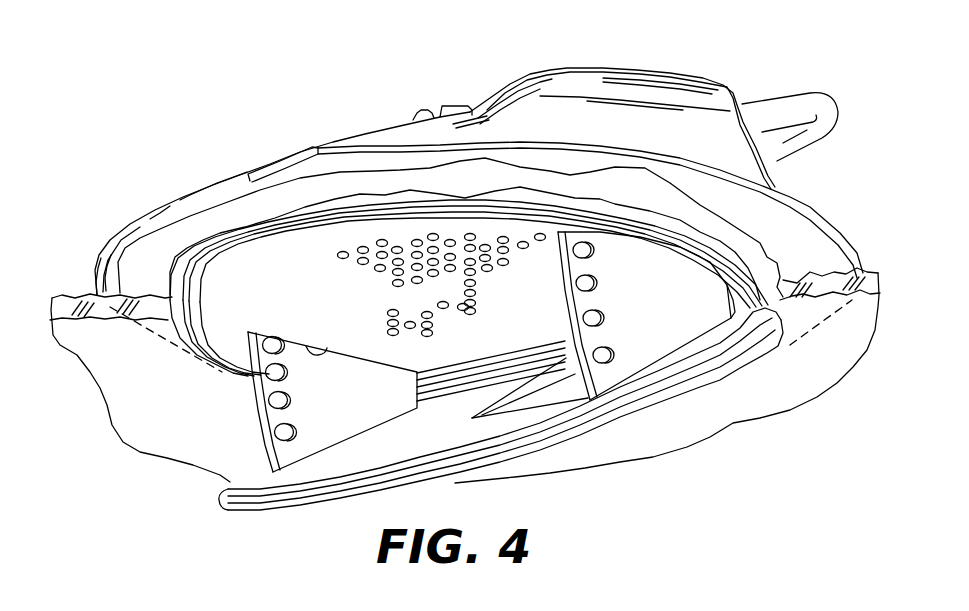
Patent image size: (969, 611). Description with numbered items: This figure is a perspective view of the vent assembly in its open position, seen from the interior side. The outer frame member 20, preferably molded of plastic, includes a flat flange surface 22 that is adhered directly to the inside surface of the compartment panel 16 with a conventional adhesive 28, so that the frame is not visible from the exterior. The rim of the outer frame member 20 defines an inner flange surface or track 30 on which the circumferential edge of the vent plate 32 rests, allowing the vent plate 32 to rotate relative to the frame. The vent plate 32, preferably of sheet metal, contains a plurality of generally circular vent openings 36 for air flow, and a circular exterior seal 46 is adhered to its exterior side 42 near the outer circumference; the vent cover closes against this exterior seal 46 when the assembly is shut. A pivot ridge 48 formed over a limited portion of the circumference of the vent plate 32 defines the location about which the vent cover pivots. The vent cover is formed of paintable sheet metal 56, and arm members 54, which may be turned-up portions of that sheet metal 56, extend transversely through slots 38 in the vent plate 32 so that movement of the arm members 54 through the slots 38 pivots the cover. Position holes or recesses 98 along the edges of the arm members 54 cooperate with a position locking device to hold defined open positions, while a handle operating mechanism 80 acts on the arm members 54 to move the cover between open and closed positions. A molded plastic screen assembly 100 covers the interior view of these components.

The panel 16 is at (127, 412).
The outer frame member 20 is at (106, 250).
The flange surface 22 is at (185, 218).
The adhesive 28 is at (328, 193).
The inner flange surface or track 30 is at (277, 518).
The vent plate 32 is at (291, 296).
The vent openings 36 is at (487, 268).
The slots 38 is at (312, 353).
The exterior side 42 is at (447, 357).
The exterior seal 46 is at (254, 260).
The pivot ridge 48 is at (537, 353).
The arm members 54 is at (363, 397).
The sheet metal 56 is at (245, 492).
The handle operating mechanism 80 is at (822, 76).
The position holes or recesses 98 is at (266, 402).
The screen assembly 100 is at (656, 60).